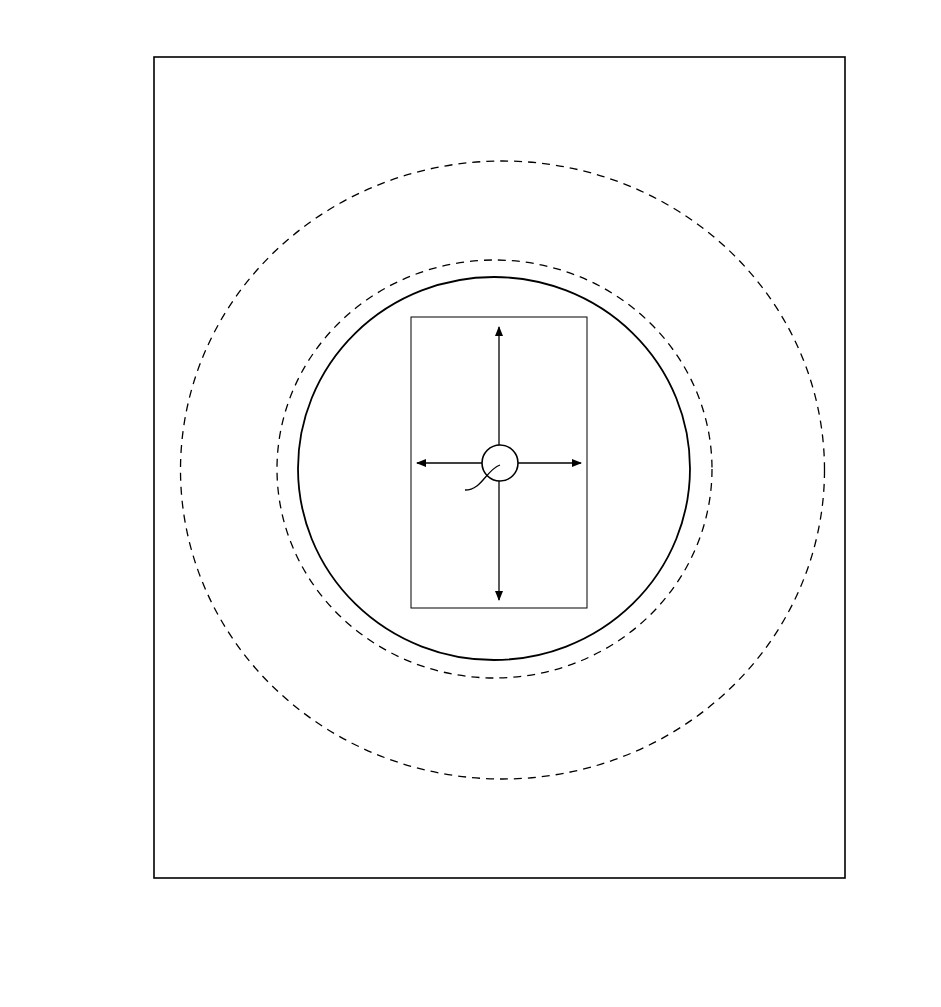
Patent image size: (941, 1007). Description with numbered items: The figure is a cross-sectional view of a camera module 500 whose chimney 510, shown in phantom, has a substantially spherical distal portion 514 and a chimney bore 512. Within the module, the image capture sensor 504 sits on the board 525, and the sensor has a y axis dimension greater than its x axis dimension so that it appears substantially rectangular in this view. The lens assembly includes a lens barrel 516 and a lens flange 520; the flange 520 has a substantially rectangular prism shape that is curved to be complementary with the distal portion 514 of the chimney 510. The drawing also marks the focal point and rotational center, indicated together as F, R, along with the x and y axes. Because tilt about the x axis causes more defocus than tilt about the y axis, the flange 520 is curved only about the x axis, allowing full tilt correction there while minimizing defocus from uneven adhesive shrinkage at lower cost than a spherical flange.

The camera module 500 is at (151, 53).
The lens flange 520 is at (848, 110).
The chimney 510 is at (804, 609).
The distal portion 514 is at (546, 470).
The chimney bore 512 is at (627, 633).
The lens barrel 516 is at (693, 478).
The board 525 is at (591, 446).
The image capture sensor 504 is at (568, 383).